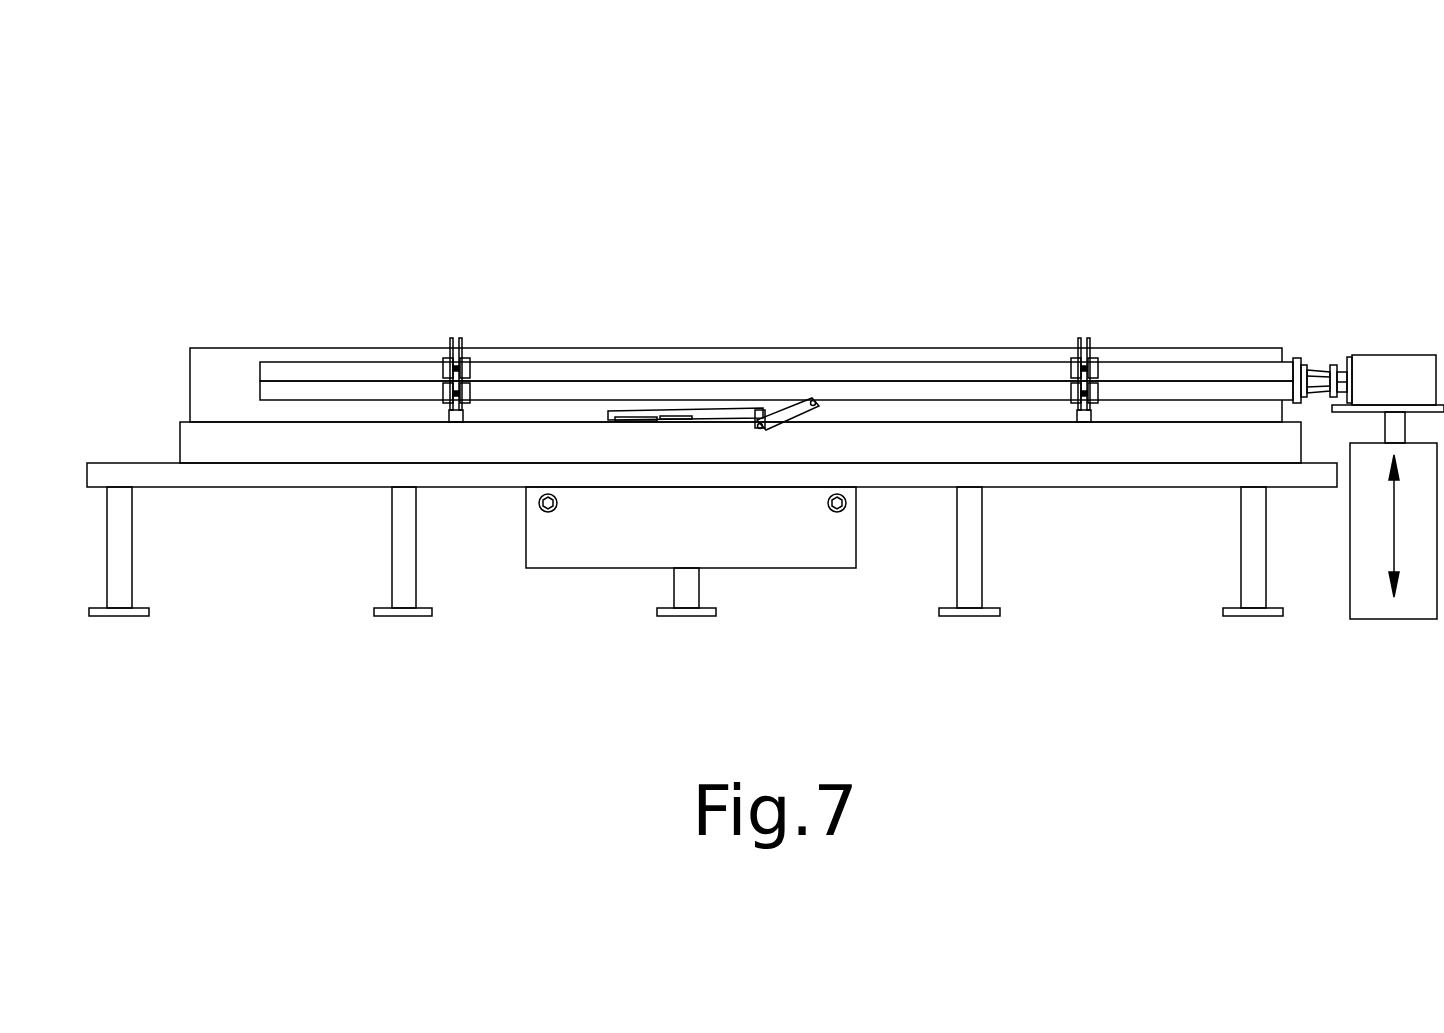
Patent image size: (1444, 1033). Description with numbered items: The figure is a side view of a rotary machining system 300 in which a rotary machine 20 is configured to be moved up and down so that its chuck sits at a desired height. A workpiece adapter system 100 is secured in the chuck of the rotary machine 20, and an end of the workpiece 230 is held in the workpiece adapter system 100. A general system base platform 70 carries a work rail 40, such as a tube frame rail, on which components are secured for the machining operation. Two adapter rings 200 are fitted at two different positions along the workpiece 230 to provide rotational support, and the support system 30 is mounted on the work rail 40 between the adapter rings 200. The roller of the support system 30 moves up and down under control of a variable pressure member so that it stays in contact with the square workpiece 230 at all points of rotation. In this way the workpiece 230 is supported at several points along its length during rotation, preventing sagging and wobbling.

The rotary machining system 300 is at (1108, 161).
The system base platform 70 is at (233, 474).
The work rail 40 is at (1093, 443).
The workpiece 230 is at (628, 365).
The adapter rings 200 is at (459, 340).
The support system 30 is at (779, 415).
The workpiece adapter system 100 is at (1312, 380).
The rotary machine 20 is at (1393, 315).